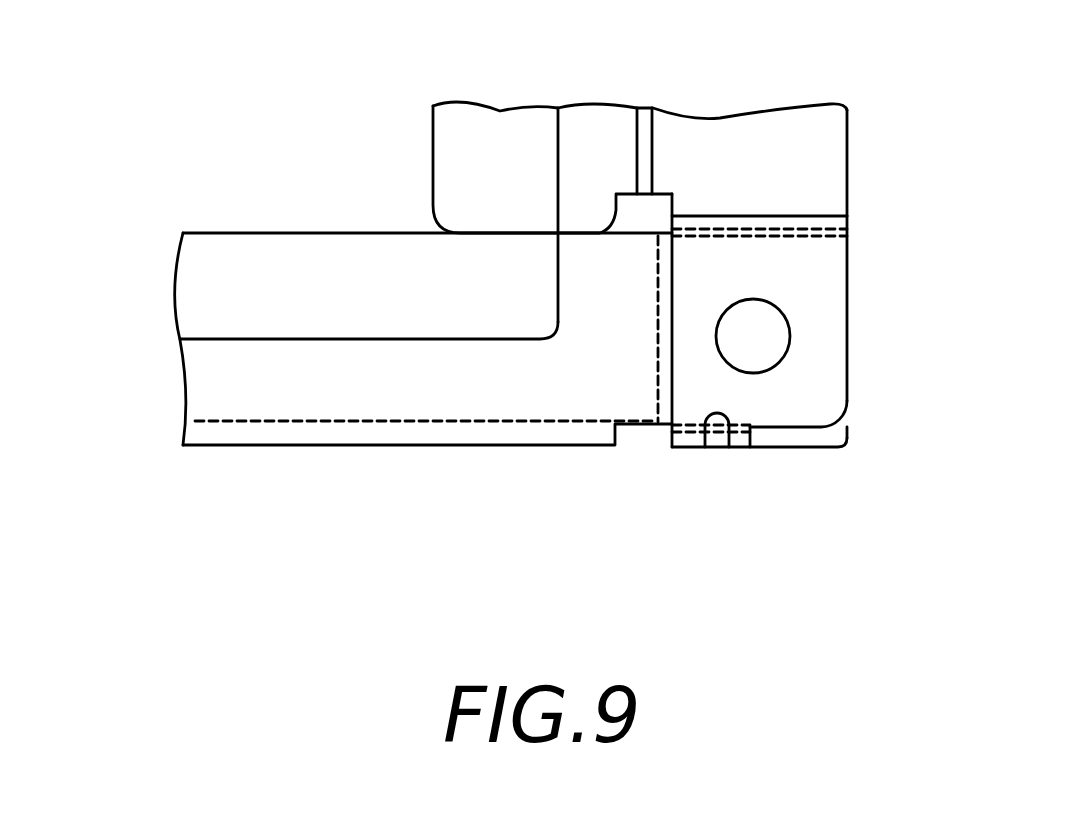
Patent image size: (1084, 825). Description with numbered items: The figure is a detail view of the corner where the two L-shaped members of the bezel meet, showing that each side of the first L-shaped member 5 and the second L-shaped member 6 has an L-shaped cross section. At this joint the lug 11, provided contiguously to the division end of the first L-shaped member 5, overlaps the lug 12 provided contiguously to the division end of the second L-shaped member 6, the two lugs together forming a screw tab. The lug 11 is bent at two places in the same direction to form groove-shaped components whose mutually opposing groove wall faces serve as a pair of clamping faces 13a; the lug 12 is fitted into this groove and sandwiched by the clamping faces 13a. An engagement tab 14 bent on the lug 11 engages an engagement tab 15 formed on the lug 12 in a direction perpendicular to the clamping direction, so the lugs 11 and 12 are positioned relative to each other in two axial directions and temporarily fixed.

The first L-shaped member 5 is at (498, 110).
The second L-shaped member 6 is at (185, 387).
The lug 11 is at (843, 357).
The lug 12 is at (847, 428).
The clamping faces 13a is at (815, 233).
The engagement tab 14 is at (700, 447).
The engagement tab 15 is at (808, 447).